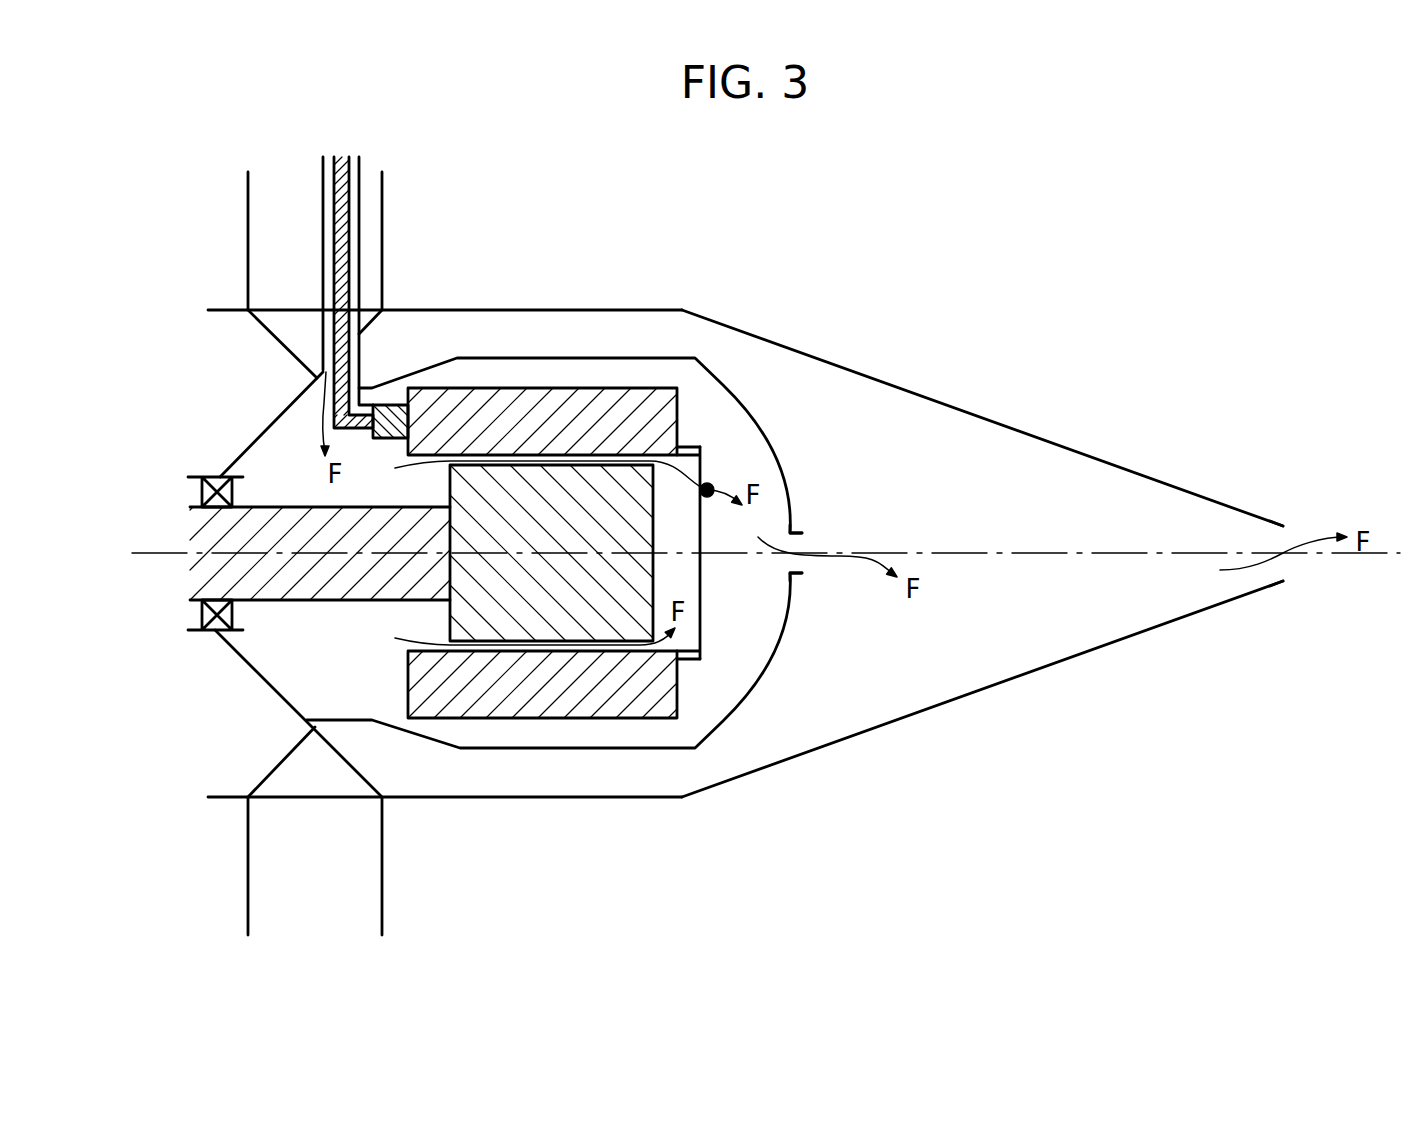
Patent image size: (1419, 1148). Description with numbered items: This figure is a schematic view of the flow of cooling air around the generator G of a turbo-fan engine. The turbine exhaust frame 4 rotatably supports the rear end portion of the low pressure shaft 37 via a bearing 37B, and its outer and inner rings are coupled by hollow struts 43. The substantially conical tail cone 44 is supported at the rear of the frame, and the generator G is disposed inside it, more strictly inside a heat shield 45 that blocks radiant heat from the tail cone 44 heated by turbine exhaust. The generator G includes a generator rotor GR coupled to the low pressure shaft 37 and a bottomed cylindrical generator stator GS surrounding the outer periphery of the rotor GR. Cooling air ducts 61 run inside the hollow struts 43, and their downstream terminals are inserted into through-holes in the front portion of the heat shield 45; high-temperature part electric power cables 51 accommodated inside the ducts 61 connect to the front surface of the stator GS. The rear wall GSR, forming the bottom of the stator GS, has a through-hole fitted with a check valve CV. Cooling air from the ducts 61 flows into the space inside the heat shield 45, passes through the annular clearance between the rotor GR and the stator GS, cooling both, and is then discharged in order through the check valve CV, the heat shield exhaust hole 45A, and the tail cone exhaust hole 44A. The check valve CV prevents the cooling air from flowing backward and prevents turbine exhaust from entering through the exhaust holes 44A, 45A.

The turbine exhaust frame 4 is at (402, 150).
The low pressure shaft 37 is at (207, 575).
The bearing 37B is at (200, 615).
The hollow struts 43 is at (383, 196).
The tail cone 44 is at (988, 419).
The tail cone exhaust hole 44A is at (1282, 539).
The heat shield 45 is at (622, 358).
The heat shield exhaust hole 45A is at (795, 543).
The high-temperature part electric power cables 51 is at (343, 275).
The cooling air ducts 61 is at (323, 203).
The generator G is at (473, 238).
The generator stator GS is at (500, 420).
The generator rotor GR is at (565, 515).
The rear wall GSR is at (703, 628).
The check valve CV is at (709, 486).